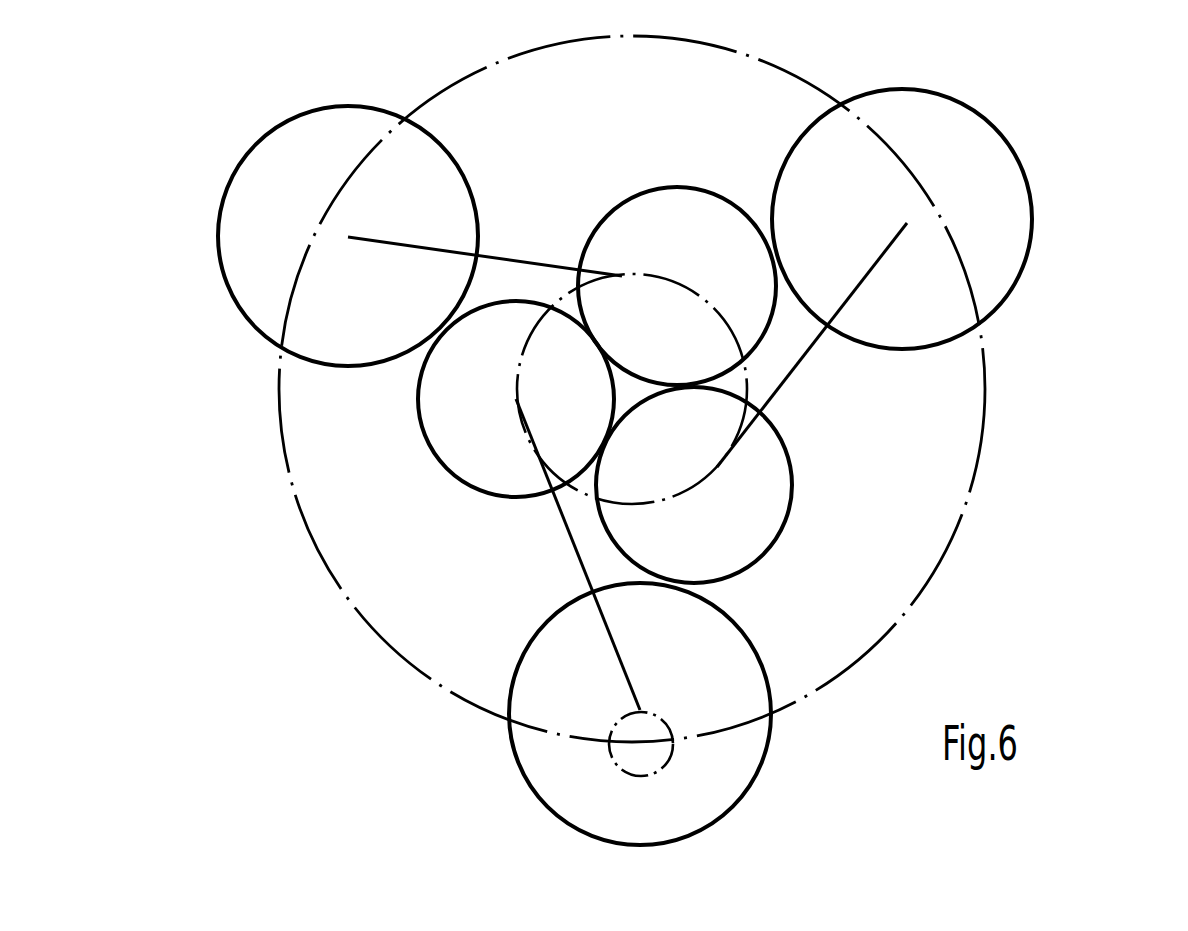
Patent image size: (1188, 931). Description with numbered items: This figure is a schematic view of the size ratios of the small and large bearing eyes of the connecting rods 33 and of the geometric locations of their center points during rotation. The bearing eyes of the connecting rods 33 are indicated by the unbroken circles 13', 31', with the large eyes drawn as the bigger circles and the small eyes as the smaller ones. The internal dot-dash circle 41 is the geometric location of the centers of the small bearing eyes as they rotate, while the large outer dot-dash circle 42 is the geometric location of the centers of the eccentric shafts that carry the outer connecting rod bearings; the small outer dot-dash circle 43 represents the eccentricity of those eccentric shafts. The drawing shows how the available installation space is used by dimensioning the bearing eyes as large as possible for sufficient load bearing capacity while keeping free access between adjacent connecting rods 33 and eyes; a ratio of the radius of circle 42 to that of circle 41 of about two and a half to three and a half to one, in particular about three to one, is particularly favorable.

The large bearing eye of the connecting rod 13' is at (960, 219).
The connecting rod 33 is at (802, 362).
The small bearing eye of the connecting rod 31' is at (834, 485).
The internal dot-dash circle 41 is at (573, 477).
The large outer dot-dash circle 42 is at (300, 513).
The small outer dot-dash circle 43 is at (673, 748).